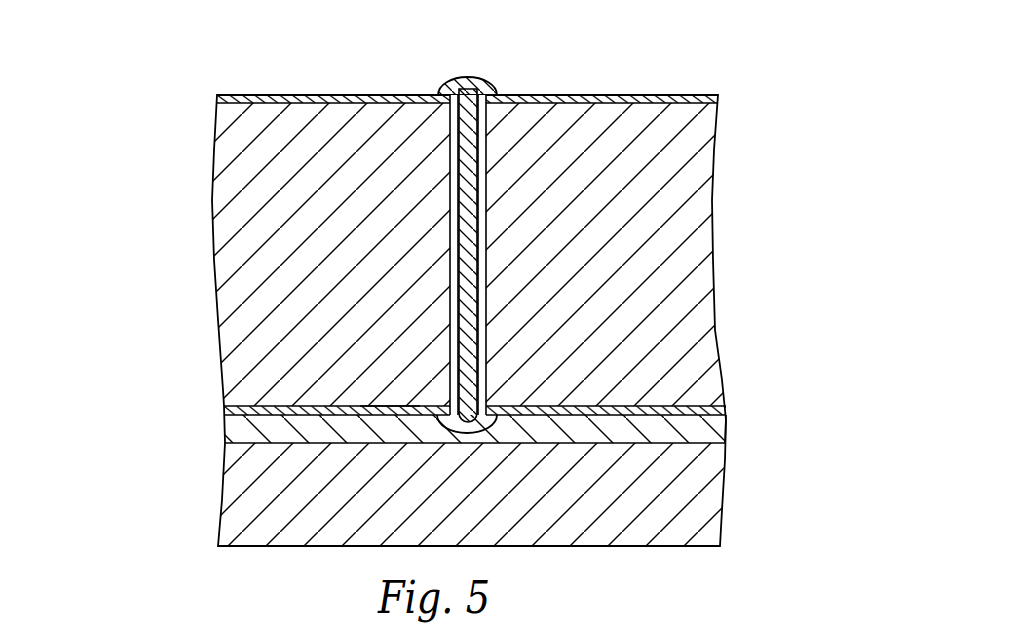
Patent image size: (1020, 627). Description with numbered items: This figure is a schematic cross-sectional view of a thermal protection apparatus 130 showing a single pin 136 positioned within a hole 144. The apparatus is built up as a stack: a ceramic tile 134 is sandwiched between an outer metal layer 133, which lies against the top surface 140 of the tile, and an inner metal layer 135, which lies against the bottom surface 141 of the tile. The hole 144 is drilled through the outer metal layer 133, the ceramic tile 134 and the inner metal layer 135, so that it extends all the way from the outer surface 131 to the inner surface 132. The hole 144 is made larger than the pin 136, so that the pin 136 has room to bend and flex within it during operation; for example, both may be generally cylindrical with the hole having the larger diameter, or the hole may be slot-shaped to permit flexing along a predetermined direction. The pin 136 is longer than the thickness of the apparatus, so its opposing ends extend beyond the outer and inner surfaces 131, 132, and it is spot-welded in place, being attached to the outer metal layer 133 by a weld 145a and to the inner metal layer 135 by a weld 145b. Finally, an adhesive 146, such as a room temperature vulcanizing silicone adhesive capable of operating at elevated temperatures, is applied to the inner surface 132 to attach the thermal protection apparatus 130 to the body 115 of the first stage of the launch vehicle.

The body 115 is at (714, 496).
The thermal protection apparatus 130 is at (162, 252).
The outer surface 131 is at (578, 95).
The inner surface 132 is at (310, 417).
The outer metal layer 133 is at (262, 95).
The ceramic tile 134 is at (361, 254).
The inner metal layer 135 is at (262, 405).
The pin 136 is at (467, 110).
The top surface 140 is at (355, 95).
The bottom surface 141 is at (390, 407).
The hole 144 is at (474, 255).
The weld 145a is at (470, 78).
The weld 145b is at (483, 430).
The adhesive 146 is at (717, 430).